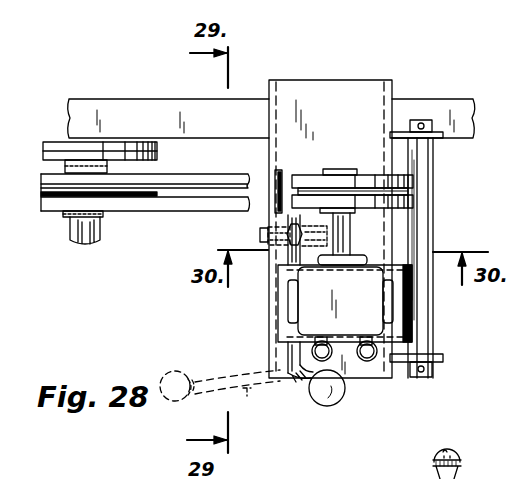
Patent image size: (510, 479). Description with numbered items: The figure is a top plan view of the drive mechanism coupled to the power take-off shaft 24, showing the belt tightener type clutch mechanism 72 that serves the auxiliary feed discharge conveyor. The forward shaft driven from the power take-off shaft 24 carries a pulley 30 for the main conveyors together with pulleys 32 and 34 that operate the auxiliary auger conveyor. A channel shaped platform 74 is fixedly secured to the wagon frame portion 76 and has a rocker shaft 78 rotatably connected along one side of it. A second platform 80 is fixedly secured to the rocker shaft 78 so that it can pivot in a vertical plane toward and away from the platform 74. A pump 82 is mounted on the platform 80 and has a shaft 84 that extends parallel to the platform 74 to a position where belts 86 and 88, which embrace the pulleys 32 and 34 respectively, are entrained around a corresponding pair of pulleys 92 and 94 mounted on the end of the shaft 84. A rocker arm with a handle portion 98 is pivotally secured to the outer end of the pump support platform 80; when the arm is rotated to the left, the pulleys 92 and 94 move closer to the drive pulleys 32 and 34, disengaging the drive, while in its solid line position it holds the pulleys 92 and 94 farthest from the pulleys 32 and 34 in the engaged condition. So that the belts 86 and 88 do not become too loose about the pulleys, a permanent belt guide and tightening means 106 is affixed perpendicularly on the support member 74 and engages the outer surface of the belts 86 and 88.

The power take-off shaft 24 is at (95, 250).
The pulley 30 is at (157, 141).
The pulley 32 is at (148, 215).
The pulley 34 is at (160, 175).
The belt tightener type clutch mechanism 72 is at (151, 281).
The channel shaped platform 74 is at (362, 92).
The wagon frame portion 76 is at (447, 107).
The rocker shaft 78 is at (433, 187).
The second platform 80 is at (285, 327).
The pump 82 is at (330, 303).
The shaft 84 is at (350, 248).
The belt 86 is at (213, 211).
The belt 88 is at (207, 175).
The pulley 92 is at (408, 211).
The pulley 94 is at (378, 175).
The handle portion 98 is at (308, 398).
The belt guide and tightening means 106 is at (283, 169).